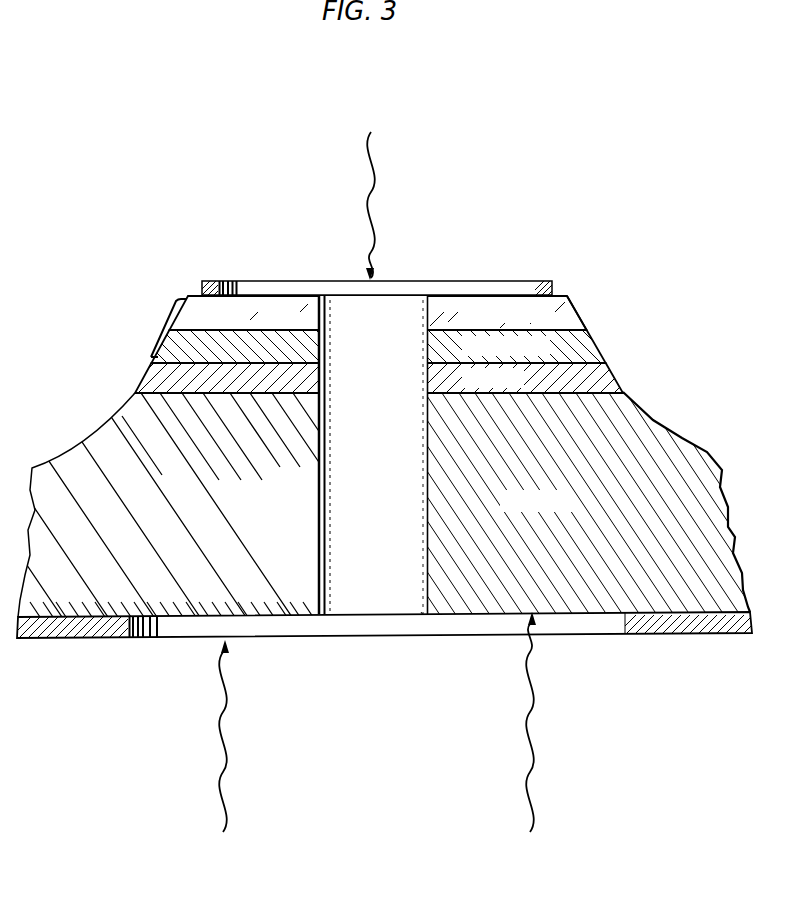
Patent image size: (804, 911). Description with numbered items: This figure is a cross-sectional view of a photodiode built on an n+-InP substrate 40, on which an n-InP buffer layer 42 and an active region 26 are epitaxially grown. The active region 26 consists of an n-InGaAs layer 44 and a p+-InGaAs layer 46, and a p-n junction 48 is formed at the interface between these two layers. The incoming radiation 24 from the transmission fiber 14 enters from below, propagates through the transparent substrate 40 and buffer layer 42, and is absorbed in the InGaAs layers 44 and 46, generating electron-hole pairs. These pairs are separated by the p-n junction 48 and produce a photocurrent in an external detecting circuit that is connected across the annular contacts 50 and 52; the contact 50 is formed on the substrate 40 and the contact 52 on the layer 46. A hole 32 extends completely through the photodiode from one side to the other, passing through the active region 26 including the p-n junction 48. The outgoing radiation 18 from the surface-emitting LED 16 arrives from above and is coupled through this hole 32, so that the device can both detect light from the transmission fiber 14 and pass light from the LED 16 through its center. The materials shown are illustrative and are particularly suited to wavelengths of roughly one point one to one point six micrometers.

The transmission fiber 14 is at (363, 748).
The surface-emitting LED 16 is at (369, 121).
The outgoing radiation 18 is at (372, 190).
The incoming radiation 24 is at (532, 735).
The active region 26 is at (167, 326).
The hole 32 is at (404, 298).
The n+-InP substrate 40 is at (635, 420).
The n-InP buffer layer 42 is at (590, 373).
The n-InGaAs layer 44 is at (567, 343).
The p+-InGaAs layer 46 is at (557, 305).
The p-n junction 48 is at (577, 318).
The annular contact 50 is at (89, 632).
The annular contact 52 is at (214, 281).